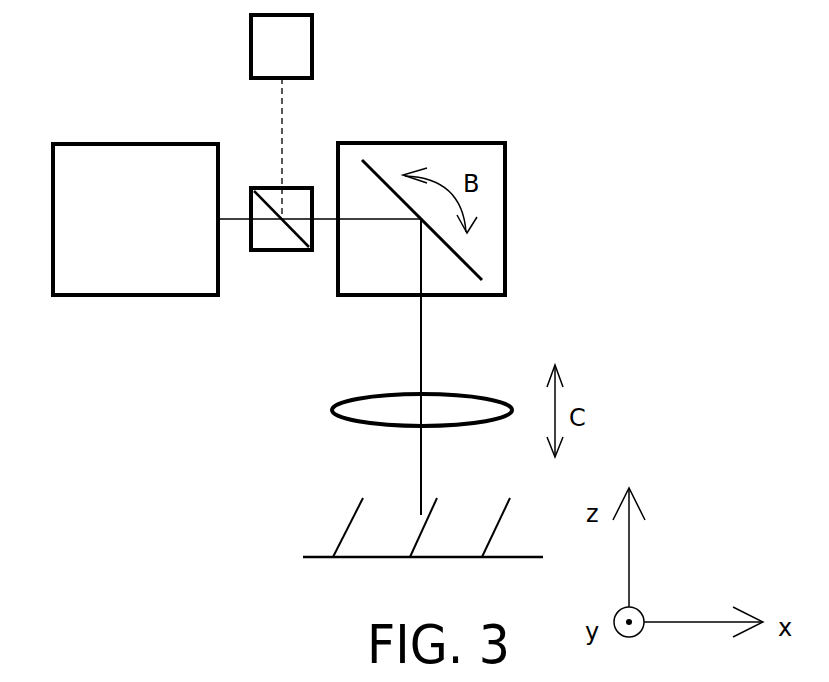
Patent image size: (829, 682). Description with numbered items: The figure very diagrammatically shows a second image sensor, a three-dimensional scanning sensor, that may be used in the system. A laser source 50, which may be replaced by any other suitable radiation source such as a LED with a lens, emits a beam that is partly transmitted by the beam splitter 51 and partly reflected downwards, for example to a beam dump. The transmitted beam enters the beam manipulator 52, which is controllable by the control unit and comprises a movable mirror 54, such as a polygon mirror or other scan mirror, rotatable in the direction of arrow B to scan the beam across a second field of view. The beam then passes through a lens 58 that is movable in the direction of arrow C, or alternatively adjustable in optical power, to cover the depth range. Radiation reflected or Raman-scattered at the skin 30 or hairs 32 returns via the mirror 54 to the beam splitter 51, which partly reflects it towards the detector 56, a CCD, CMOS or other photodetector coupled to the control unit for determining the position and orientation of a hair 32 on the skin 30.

The skin 30 is at (318, 555).
The hairs 32 is at (350, 516).
The laser source 50 is at (102, 297).
The beam splitter 51 is at (263, 186).
The beam manipulator 52 is at (462, 141).
The movable mirror 54 is at (480, 270).
The detector 56 is at (313, 50).
The lens 58 is at (332, 411).